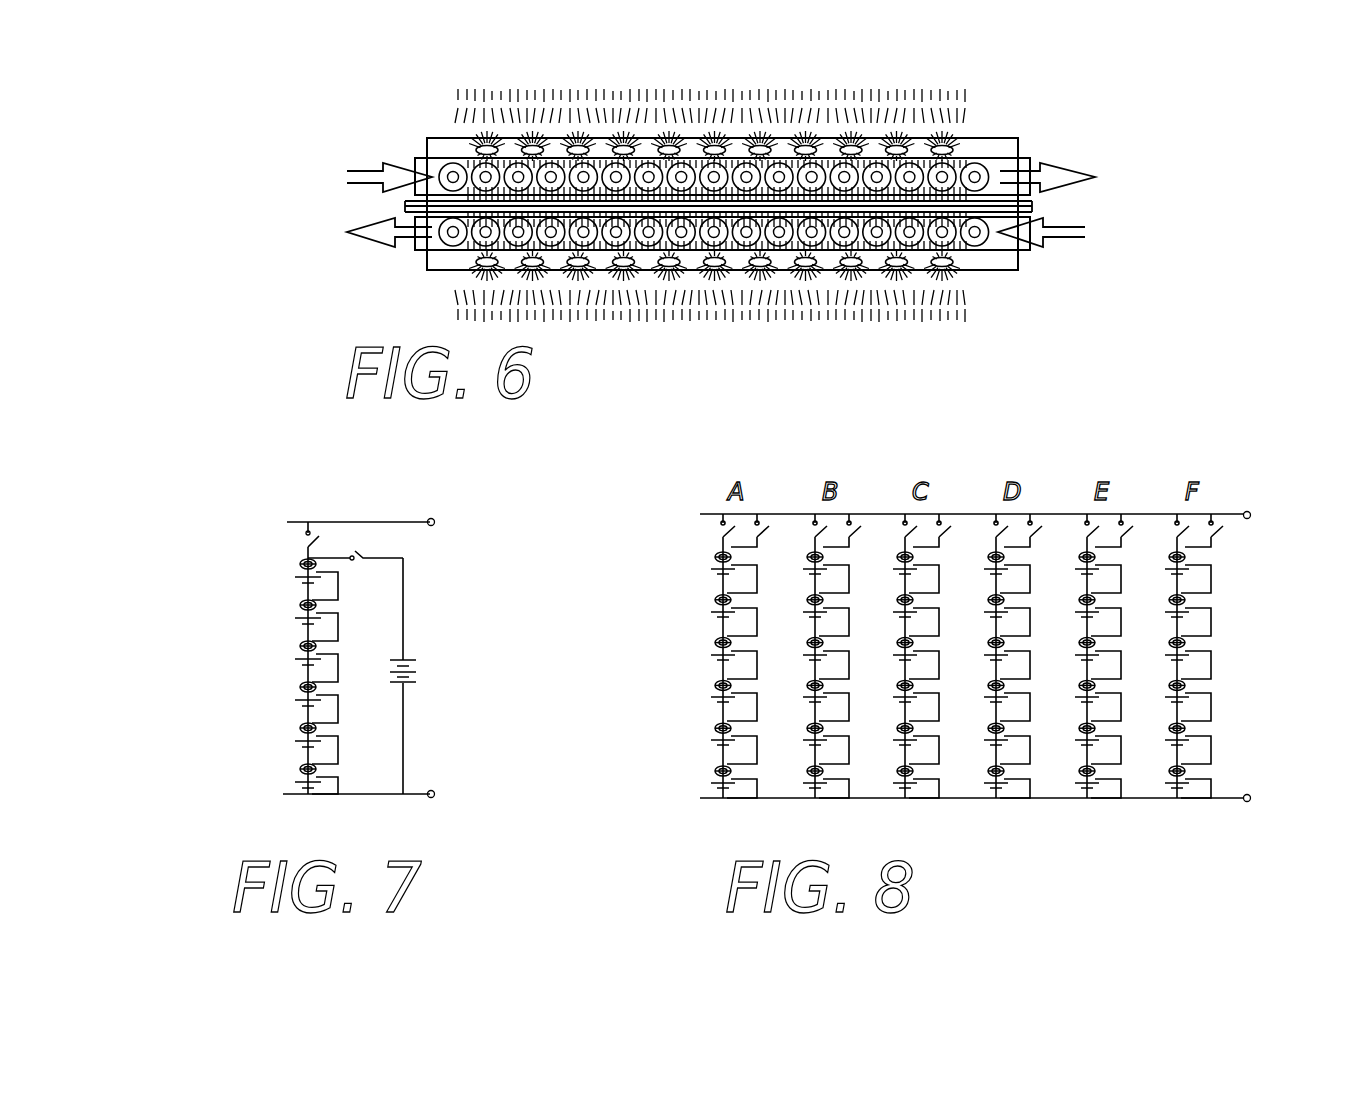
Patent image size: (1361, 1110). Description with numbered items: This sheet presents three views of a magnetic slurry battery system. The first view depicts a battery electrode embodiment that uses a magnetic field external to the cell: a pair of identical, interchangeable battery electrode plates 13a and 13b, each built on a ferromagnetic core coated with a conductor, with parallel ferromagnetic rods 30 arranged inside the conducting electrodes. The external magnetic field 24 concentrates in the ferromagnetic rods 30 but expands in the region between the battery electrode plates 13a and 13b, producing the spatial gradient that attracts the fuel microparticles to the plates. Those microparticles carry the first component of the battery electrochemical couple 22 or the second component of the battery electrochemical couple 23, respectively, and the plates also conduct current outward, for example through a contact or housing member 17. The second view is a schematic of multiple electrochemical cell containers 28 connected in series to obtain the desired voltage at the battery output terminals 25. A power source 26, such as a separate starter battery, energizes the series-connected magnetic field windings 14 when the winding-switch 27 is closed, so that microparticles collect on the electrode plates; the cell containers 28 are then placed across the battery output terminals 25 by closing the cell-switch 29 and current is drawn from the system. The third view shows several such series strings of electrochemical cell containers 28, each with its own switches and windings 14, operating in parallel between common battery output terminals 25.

In FIG. 6, the battery electrode plate 13a is at (835, 150).
In FIG. 6, the battery electrode plate 13b is at (788, 268).
In FIG. 7, the magnetic field windings 14 is at (298, 728).
In FIG. 6, the housing 17 is at (1089, 188).
In FIG. 6, the first component of the battery electrochemical couple 22 is at (377, 172).
In FIG. 6, the second component of the battery electrochemical couple 23 is at (400, 234).
In FIG. 6, the magnetic field 24 is at (652, 326).
In FIG. 7, the battery output terminals 25 is at (431, 519).
In FIG. 8, the battery output terminals 25 is at (1250, 511).
In FIG. 7, the power source 26 is at (412, 660).
In FIG. 7, the winding-switch 27 is at (364, 556).
In FIG. 7, the electrochemical cell containers 28 is at (272, 670).
In FIG. 7, the cell-switch 29 is at (306, 546).
In FIG. 6, the parallel ferromagnetic rods 30 is at (626, 148).